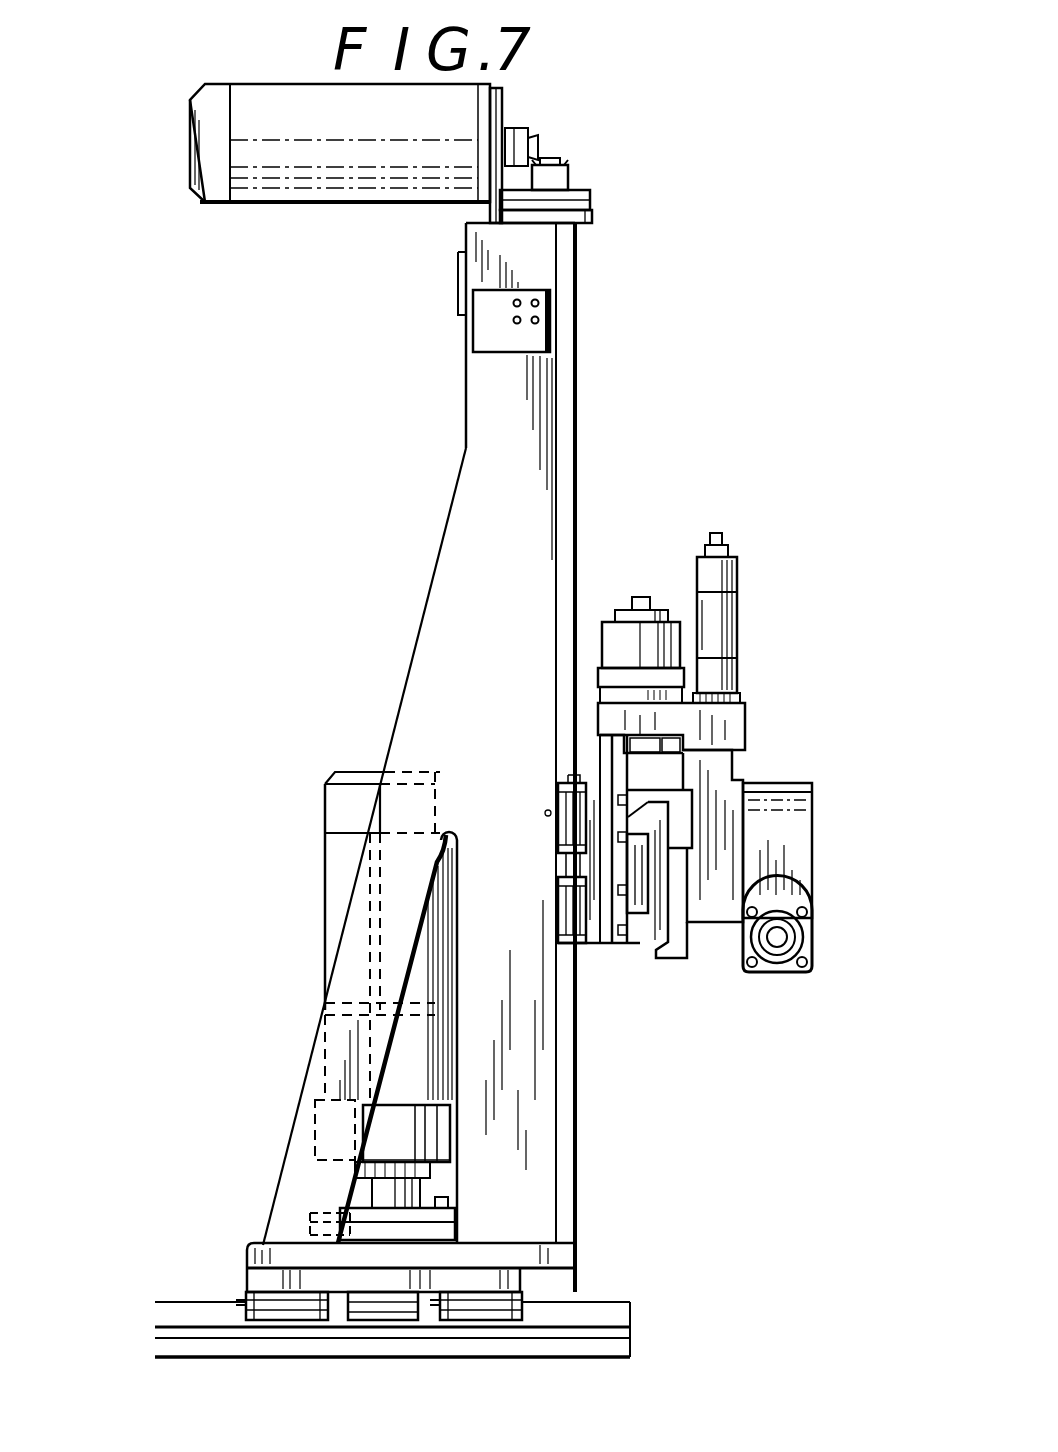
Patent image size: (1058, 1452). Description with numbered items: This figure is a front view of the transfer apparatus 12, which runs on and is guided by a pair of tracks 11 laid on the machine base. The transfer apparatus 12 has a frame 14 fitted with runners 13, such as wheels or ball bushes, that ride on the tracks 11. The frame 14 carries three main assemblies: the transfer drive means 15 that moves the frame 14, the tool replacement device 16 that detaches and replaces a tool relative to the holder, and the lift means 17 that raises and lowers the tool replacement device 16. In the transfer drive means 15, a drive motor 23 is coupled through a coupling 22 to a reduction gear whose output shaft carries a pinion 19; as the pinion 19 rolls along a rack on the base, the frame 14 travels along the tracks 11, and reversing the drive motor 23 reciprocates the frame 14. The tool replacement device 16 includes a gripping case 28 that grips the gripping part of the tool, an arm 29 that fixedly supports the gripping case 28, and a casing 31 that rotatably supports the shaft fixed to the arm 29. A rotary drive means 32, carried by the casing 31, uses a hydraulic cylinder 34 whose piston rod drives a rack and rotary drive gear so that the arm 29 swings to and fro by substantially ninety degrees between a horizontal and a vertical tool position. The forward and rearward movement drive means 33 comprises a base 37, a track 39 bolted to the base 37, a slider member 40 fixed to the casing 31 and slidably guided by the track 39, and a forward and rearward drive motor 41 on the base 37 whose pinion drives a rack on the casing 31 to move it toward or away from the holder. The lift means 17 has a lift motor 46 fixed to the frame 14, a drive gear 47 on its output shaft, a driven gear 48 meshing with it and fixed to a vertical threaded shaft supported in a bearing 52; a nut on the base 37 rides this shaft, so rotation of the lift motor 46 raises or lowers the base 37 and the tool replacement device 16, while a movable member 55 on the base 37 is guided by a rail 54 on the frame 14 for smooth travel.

The tracks 11 is at (595, 1325).
The transfer apparatus 12 is at (598, 453).
The runners 13 is at (290, 1305).
The frame 14 is at (410, 668).
The transfer drive means 15 is at (322, 893).
The tool replacement device 16 is at (760, 715).
The lift means 17 is at (605, 220).
The pinion 19 is at (370, 1300).
The coupling 22 is at (315, 1140).
The drive motor 23 is at (325, 945).
The gripping case 28 is at (805, 937).
The arm 29 is at (795, 850).
The casing 31 is at (745, 770).
The rotary drive means 32 is at (750, 590).
The forward and rearward movement drive means 33 is at (641, 588).
The hydraulic cylinder 34 is at (730, 642).
The base 37 is at (605, 950).
The track 39 is at (635, 915).
The slider member 40 is at (660, 948).
The forward and rearward drive motor 41 is at (668, 635).
The lift motor 46 is at (365, 205).
The drive gear 47 is at (535, 130).
The driven gear 48 is at (572, 182).
The bearing 52 is at (600, 202).
The rail 54 is at (572, 513).
The movable member 55 is at (560, 785).